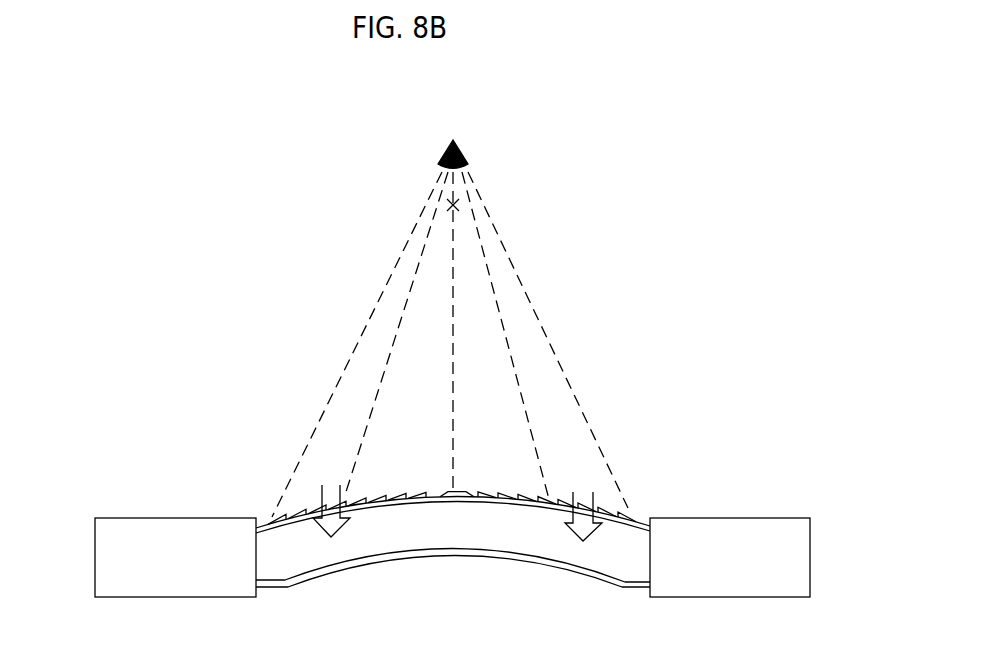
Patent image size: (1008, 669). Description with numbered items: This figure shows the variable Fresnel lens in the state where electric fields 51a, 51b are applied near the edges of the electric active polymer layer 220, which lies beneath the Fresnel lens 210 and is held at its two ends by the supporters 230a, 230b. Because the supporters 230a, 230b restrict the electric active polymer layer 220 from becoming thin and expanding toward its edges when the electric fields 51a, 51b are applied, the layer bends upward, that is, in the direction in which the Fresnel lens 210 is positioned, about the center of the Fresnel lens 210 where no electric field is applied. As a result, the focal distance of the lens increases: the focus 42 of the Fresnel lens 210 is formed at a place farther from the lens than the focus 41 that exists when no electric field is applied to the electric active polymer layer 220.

The focus 42 is at (446, 150).
The focus 41 is at (463, 206).
The electric field 51a is at (331, 498).
The electric field 51b is at (585, 502).
The Fresnel lens 210 is at (613, 516).
The electric active polymer layer 220 is at (462, 525).
The supporter 230a is at (178, 528).
The supporter 230b is at (738, 528).